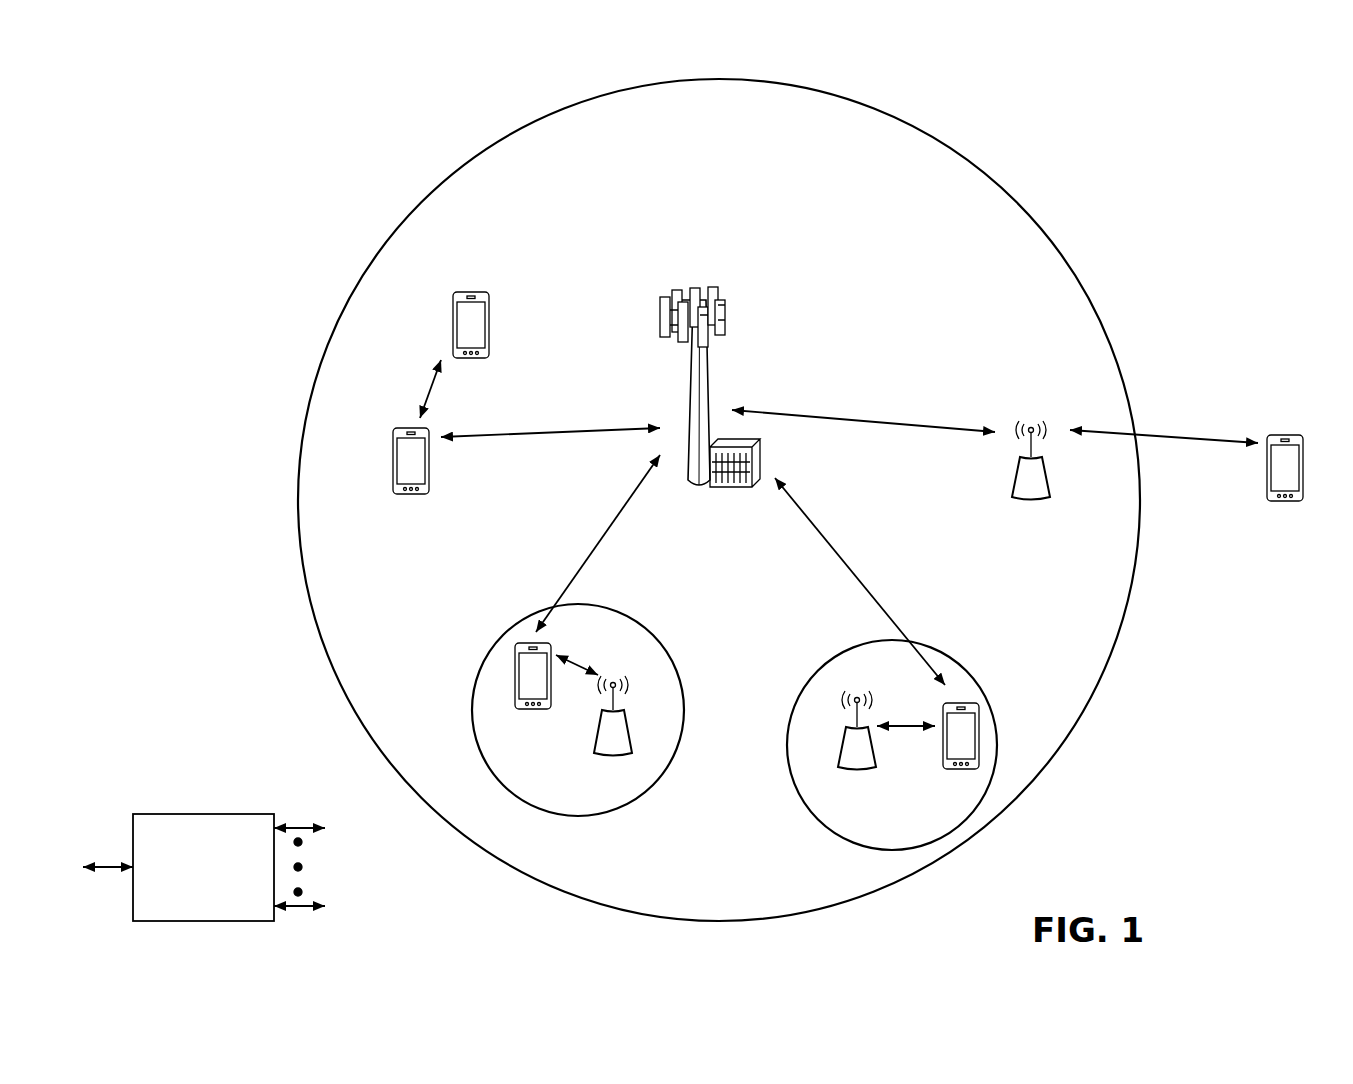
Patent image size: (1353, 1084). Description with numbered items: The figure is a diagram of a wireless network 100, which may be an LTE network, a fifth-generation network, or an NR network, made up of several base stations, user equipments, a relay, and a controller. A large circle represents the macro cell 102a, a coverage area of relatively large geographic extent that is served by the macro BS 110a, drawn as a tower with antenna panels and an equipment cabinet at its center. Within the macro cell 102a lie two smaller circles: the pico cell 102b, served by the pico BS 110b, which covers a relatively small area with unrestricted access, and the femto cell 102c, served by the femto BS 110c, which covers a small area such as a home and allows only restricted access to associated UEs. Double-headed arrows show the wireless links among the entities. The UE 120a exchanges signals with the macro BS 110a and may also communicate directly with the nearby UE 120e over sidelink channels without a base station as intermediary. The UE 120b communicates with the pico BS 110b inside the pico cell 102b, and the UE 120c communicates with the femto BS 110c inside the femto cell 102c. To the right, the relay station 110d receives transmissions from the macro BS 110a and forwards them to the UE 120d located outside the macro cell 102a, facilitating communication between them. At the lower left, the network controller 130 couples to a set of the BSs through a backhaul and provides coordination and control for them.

The wireless network 100 is at (172, 78).
The macro cell 102a is at (1000, 186).
The pico cell 102b is at (666, 650).
The femto cell 102c is at (830, 660).
The macro BS 110a is at (706, 282).
The pico BS 110b is at (634, 738).
The femto BS 110c is at (836, 762).
The relay station 110d is at (1031, 423).
The UE 120a is at (393, 457).
The UE 120b is at (518, 711).
The UE 120c is at (946, 771).
The UE 120d is at (1298, 435).
The UE 120e is at (453, 312).
The network controller 130 is at (204, 814).